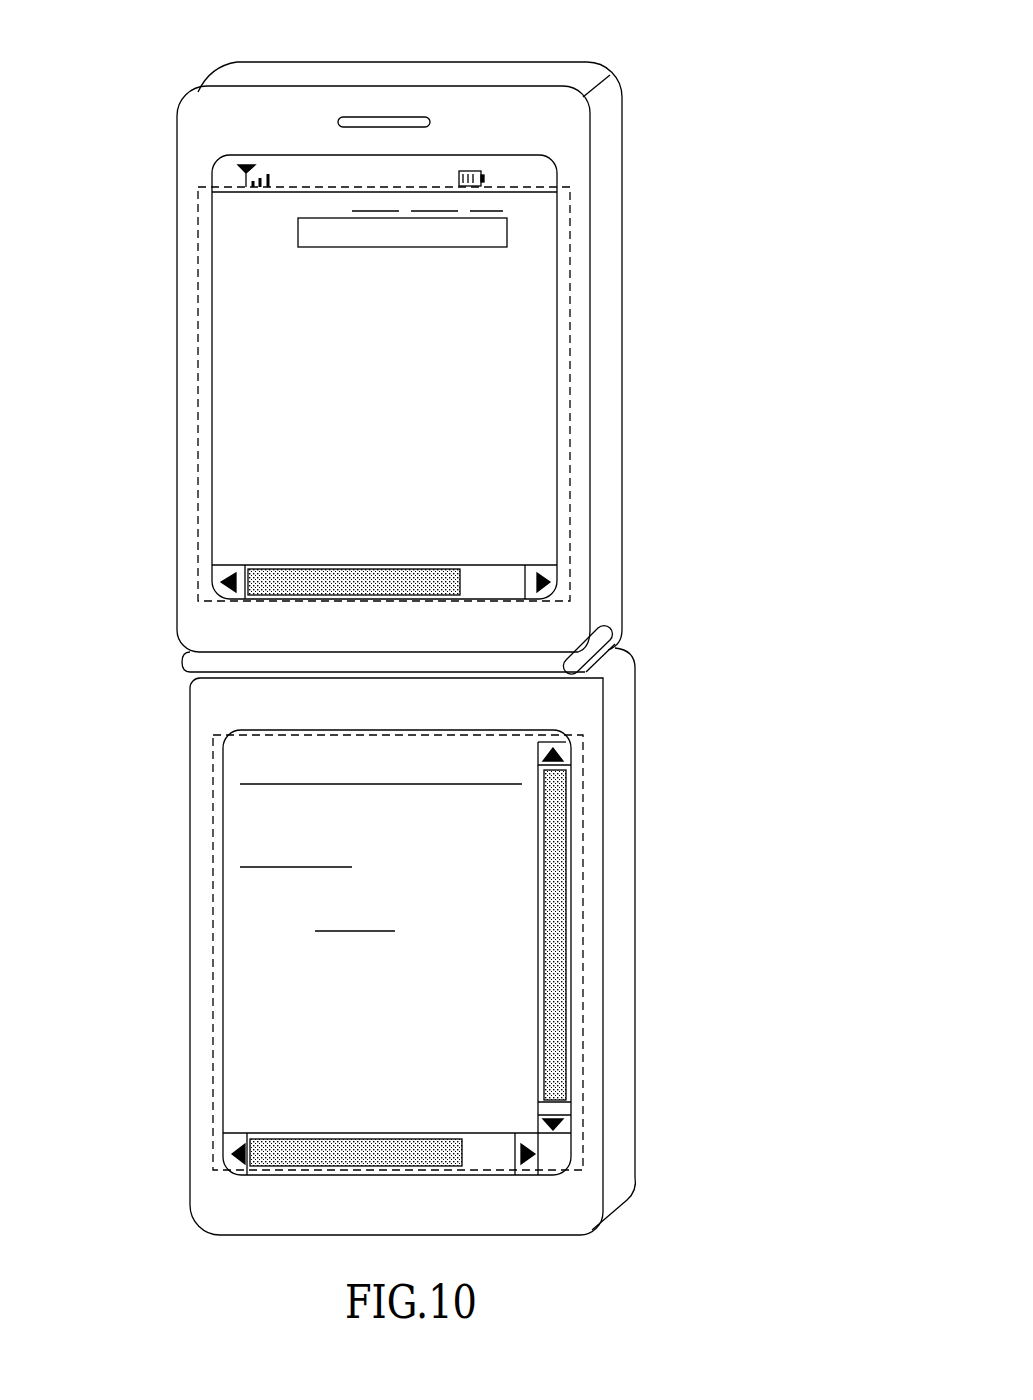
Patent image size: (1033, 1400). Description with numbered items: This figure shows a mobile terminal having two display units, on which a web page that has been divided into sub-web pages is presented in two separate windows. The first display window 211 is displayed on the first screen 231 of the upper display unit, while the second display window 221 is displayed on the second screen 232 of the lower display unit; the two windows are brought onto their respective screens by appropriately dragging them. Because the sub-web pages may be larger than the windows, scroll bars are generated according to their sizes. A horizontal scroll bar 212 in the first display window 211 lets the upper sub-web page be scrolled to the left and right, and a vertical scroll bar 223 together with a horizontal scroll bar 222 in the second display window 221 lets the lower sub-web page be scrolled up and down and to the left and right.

The first display window 211 is at (570, 348).
The horizontal scroll bar 212 is at (320, 580).
The second display window 221 is at (585, 861).
The horizontal scroll bar 222 is at (345, 1158).
The vertical scroll bar 223 is at (553, 974).
The first screen 231 is at (327, 346).
The second screen 232 is at (505, 979).